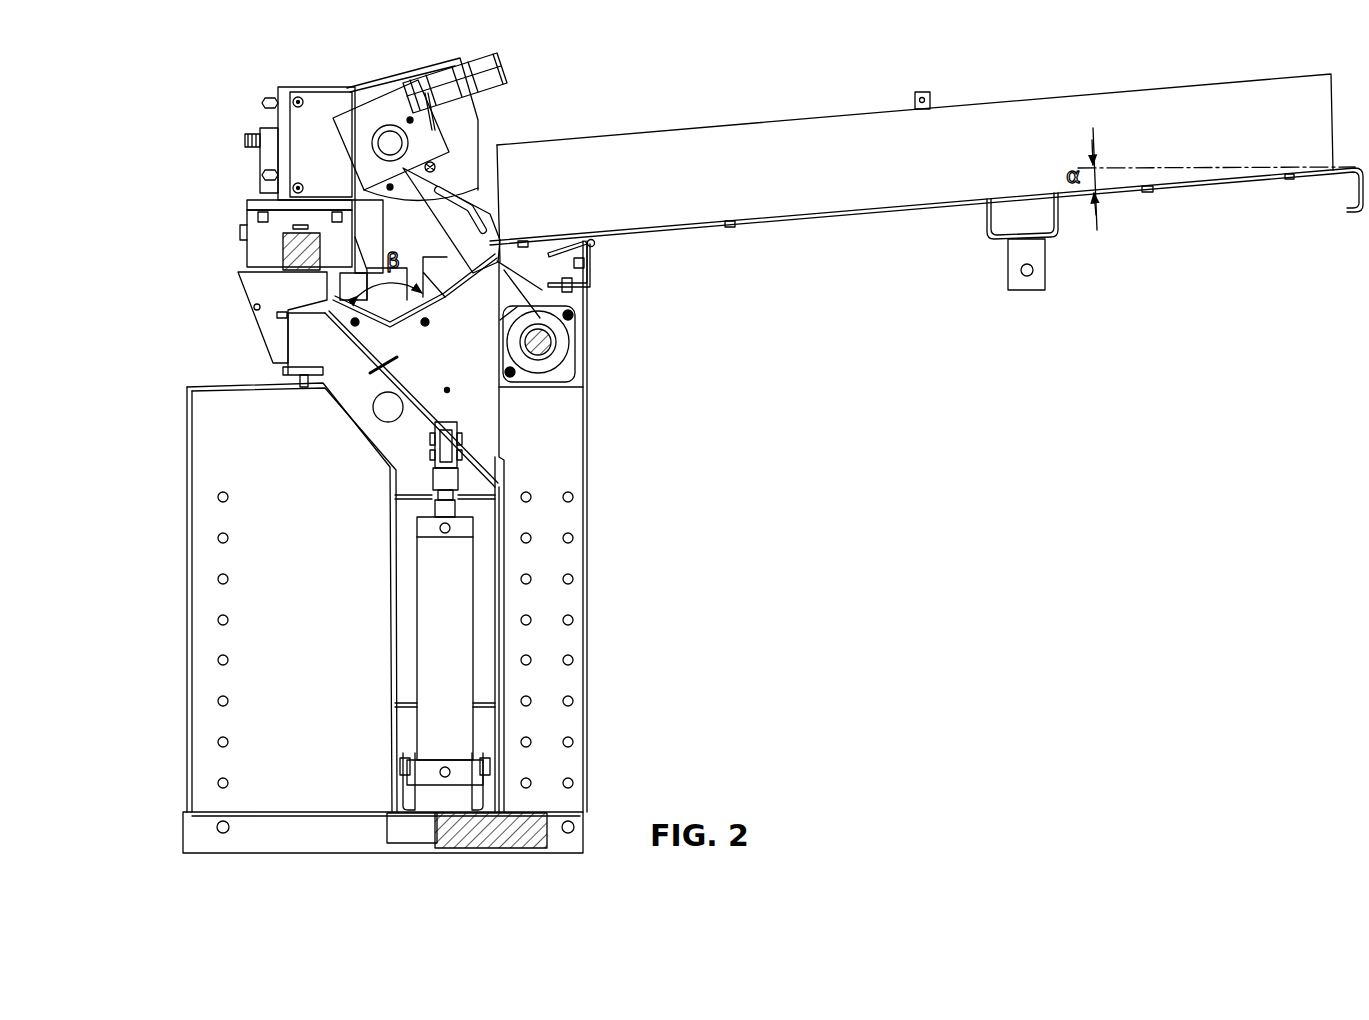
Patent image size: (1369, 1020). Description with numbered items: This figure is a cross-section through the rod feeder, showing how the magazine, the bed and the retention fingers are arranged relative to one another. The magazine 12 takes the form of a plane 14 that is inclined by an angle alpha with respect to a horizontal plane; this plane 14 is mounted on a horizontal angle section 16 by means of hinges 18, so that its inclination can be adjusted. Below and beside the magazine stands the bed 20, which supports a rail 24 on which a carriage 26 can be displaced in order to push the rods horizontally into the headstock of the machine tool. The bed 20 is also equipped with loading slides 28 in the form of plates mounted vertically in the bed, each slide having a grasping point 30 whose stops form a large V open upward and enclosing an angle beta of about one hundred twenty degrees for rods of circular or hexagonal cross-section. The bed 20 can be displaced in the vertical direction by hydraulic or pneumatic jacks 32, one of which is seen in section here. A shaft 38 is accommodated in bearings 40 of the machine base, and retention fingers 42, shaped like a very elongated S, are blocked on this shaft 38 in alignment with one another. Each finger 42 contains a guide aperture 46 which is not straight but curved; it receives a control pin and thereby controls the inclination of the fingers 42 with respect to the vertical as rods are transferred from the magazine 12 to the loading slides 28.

The magazine 12 is at (962, 230).
The plane 14 is at (787, 220).
The horizontal angle section 16 is at (591, 290).
The hinges 18 is at (596, 245).
The bed 20 is at (235, 323).
The rail 24 is at (290, 245).
The carriage 26 is at (215, 165).
The loading slides 28 is at (482, 442).
The grasping point 30 is at (497, 261).
The hydraulic or pneumatic jacks 32 is at (445, 663).
The shaft 38 is at (552, 347).
The bearings 40 is at (542, 367).
The retention finger 42 is at (490, 214).
The guide aperture 46 is at (485, 222).